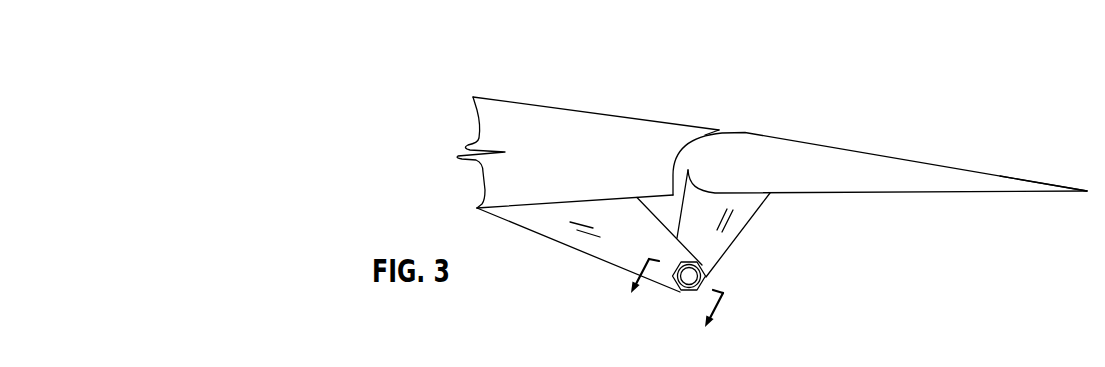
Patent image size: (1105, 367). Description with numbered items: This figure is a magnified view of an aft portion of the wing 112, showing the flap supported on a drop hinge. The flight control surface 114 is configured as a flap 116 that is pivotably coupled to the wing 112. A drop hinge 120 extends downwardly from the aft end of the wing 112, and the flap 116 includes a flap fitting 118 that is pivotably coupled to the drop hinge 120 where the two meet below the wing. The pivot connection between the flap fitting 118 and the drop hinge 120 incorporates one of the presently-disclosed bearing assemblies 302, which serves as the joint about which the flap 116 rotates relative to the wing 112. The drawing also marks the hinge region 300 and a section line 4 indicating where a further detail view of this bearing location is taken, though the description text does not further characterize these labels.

The wing 112 is at (527, 98).
The flight control surface 114 is at (1032, 182).
The flap 116 is at (839, 146).
The flap fitting 118 is at (735, 217).
The drop hinge 120 is at (580, 227).
The hinge nut 300 is at (681, 292).
The bearing assembly 302 is at (702, 275).
The section line 4- 4 is at (667, 310).